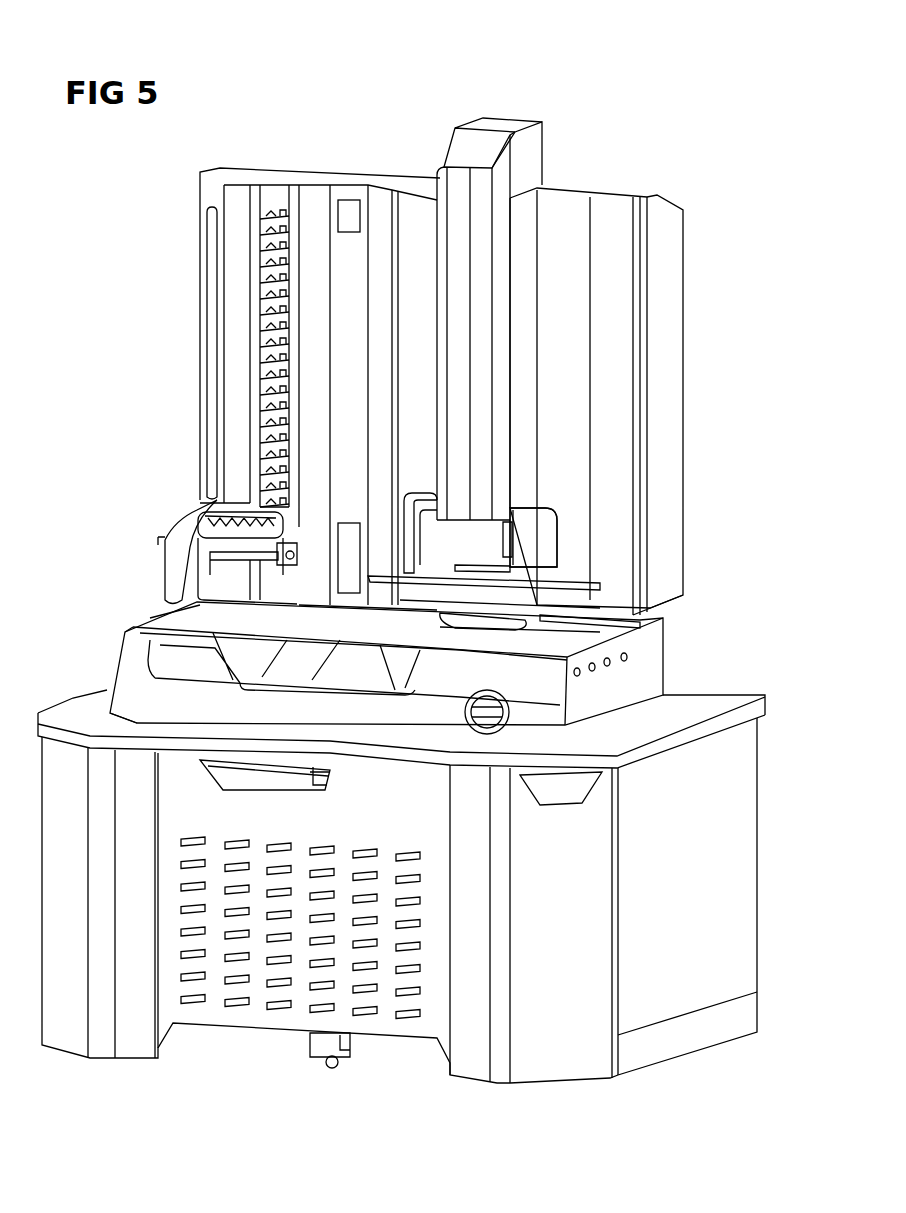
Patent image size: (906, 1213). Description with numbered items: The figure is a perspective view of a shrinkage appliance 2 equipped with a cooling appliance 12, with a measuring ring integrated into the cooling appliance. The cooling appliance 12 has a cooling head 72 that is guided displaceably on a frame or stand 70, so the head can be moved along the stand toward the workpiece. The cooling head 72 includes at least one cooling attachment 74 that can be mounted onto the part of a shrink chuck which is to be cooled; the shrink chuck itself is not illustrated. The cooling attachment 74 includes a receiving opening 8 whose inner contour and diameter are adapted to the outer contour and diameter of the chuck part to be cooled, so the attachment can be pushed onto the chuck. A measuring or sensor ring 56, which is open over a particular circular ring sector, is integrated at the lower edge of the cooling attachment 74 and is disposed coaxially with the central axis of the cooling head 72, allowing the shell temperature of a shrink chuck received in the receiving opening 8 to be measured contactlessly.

The shrinkage appliance 2 is at (405, 118).
The receiving opening 8 is at (470, 598).
The cooling appliance 12 is at (580, 150).
The frame or stand 70 is at (502, 290).
The cooling head 72 is at (552, 535).
The cooling attachment 74 is at (533, 537).
The measuring or sensor ring 56 is at (500, 568).